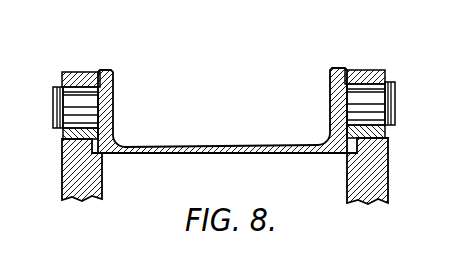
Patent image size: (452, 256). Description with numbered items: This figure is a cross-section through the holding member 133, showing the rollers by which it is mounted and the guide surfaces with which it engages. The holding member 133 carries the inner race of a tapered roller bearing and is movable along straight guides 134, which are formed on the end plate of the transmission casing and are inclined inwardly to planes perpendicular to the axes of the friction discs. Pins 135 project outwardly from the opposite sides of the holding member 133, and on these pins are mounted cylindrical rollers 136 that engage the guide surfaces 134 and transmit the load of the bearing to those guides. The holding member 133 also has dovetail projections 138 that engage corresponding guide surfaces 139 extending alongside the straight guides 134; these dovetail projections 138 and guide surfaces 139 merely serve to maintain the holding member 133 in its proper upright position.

The holding member 133 is at (339, 70).
The straight guides 134 is at (68, 133).
The pins 135 is at (75, 100).
The cylindrical rollers 136 is at (360, 70).
The dovetail projections 138 is at (62, 176).
The guide surfaces 139 is at (102, 148).